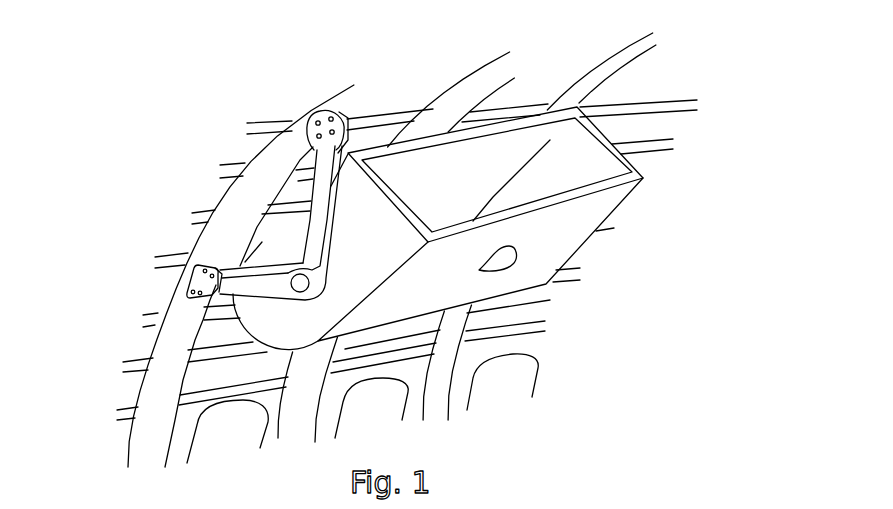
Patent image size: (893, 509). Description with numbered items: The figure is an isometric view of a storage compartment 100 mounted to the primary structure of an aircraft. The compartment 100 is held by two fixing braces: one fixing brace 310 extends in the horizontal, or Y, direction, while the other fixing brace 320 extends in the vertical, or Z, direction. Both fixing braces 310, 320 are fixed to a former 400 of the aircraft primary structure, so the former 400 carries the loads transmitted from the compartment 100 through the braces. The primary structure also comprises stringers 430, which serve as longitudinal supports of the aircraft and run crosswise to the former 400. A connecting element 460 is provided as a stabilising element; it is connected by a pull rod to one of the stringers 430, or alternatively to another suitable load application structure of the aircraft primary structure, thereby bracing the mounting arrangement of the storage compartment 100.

The stowage unit / overhead bin housing 100 is at (557, 242).
The fixing brace 310 is at (200, 303).
The fixing brace 320 is at (313, 165).
The former 400 is at (464, 94).
The stringers 430 is at (516, 111).
The connecting element 460 is at (233, 255).